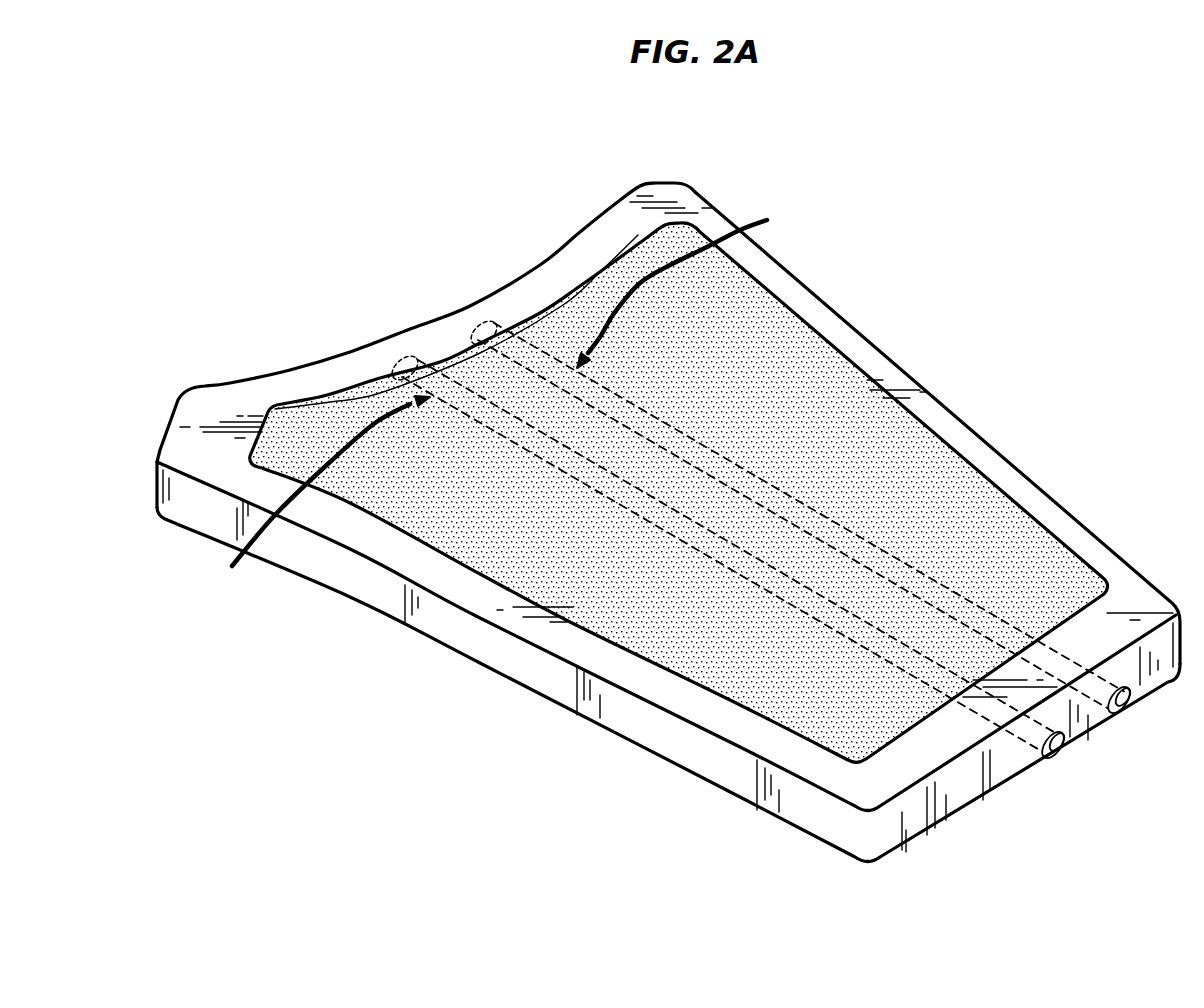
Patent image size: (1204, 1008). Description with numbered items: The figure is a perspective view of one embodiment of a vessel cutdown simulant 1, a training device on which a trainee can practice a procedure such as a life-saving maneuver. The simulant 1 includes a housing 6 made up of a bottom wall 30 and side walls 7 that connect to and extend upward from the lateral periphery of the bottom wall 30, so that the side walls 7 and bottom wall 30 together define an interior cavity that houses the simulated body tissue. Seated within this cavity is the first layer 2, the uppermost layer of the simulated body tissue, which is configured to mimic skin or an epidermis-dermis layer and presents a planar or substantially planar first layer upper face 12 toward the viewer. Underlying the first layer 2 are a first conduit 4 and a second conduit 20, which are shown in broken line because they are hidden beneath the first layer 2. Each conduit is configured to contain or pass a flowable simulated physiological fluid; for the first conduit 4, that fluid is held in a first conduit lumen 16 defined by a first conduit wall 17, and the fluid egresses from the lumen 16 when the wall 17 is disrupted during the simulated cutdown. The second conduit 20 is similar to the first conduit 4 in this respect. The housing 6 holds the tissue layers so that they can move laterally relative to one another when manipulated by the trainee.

The vessel cutdown simulant 1 is at (944, 129).
The first layer 2 is at (679, 492).
The first layer upper face 12 is at (900, 457).
The first conduit 4 is at (679, 286).
The second conduit 20 is at (318, 497).
The housing 6 is at (1053, 517).
The side wall 7 is at (623, 727).
The first conduit lumen 16 is at (717, 463).
The first conduit wall 17 is at (640, 403).
The bottom wall 30 is at (806, 833).